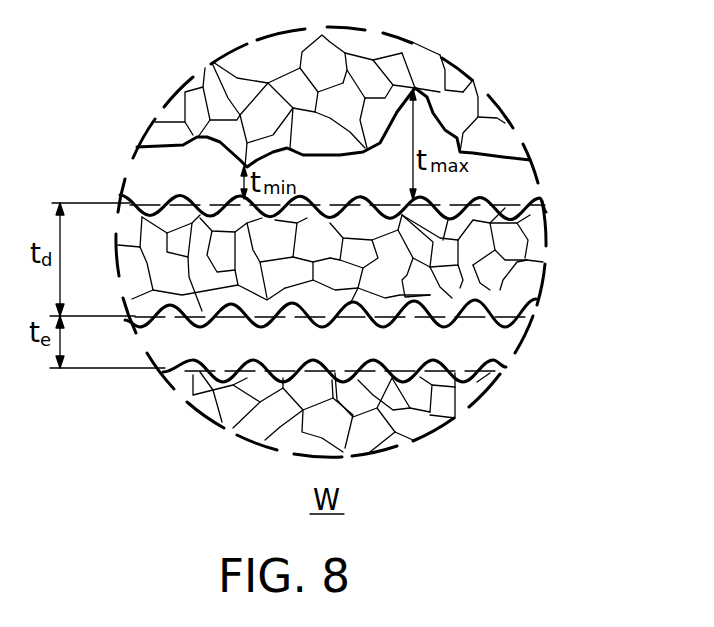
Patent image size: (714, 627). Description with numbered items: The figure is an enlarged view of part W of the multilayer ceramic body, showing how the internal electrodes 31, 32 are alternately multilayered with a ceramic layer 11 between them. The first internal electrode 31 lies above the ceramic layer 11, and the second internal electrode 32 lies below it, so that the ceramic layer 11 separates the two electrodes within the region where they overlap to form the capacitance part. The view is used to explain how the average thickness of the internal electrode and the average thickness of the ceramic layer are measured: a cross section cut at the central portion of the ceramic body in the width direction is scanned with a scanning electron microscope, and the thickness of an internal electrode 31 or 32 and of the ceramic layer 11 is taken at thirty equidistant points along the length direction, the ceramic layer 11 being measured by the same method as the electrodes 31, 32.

The internal electrode 31 is at (522, 187).
The ceramic layer 11 is at (520, 267).
The internal electrode 32 is at (513, 350).